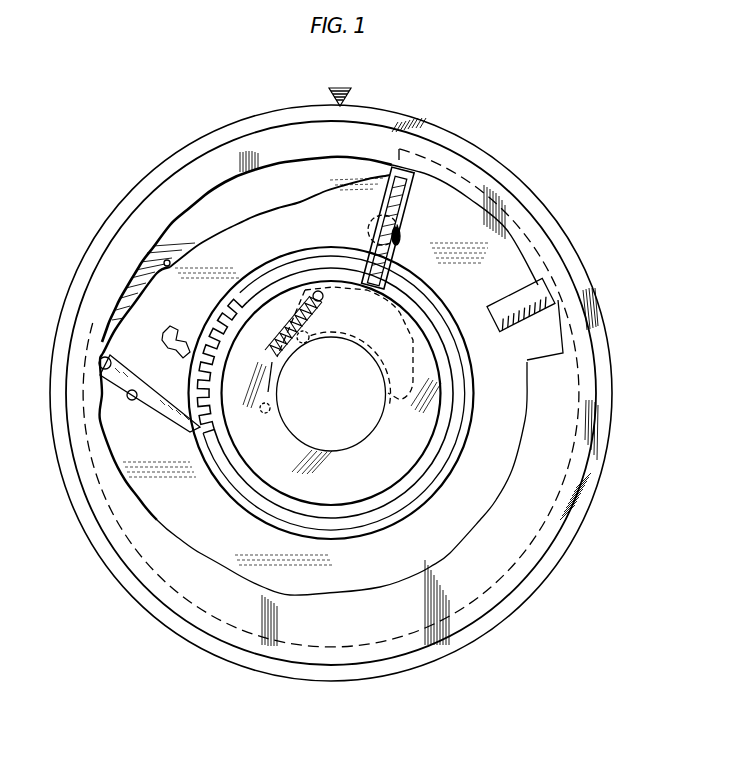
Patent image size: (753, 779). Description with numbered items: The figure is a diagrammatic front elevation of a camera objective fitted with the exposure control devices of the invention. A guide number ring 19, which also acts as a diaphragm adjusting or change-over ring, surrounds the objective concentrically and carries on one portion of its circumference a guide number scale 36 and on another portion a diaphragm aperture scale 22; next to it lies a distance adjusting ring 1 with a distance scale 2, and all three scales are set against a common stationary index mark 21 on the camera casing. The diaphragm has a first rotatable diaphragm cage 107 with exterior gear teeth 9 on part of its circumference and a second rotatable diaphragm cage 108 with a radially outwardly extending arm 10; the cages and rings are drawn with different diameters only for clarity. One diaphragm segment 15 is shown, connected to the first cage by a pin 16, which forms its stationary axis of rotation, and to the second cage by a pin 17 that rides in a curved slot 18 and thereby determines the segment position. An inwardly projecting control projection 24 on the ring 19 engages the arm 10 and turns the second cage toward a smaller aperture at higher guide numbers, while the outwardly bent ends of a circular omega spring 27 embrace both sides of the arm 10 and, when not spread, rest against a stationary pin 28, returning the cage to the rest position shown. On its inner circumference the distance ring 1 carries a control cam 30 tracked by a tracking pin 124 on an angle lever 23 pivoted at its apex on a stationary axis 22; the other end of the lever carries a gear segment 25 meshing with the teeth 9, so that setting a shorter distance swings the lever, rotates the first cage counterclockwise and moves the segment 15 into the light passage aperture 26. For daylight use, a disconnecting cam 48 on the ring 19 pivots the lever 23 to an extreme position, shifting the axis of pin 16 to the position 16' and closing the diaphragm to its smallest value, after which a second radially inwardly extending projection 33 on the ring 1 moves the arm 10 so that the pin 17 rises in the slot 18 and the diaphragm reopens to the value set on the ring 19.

The distance adjusting ring 1 is at (100, 270).
The distance scale 2 is at (232, 147).
The exterior gear teeth 9 is at (232, 315).
The radially outwardly extending arm 10 is at (412, 185).
The diaphragm segment 15 is at (423, 313).
The pin 16 is at (320, 348).
The position of pin 16 16' is at (253, 420).
The pin 17 is at (323, 298).
The curved slot 18 is at (285, 352).
The guide number ring 19 is at (470, 148).
The stationary index mark 21 is at (330, 94).
The diaphragm aperture scale 22 is at (132, 401).
The angle lever 23 is at (165, 412).
The control projection 24 is at (373, 167).
The gear segment 25 is at (195, 353).
The light passage aperture 26 is at (367, 423).
The circular omega spring 27 is at (410, 277).
The stationary pin 28 is at (402, 229).
The control cam 30 is at (137, 497).
The second radially inwardly extending projection 33 is at (503, 305).
The guide number scale 36 is at (200, 152).
The disconnecting cam 48 is at (168, 260).
The first rotatable diaphragm cage 107 is at (278, 288).
The second rotatable diaphragm cage 108 is at (250, 468).
The tracking pin 124 is at (109, 358).